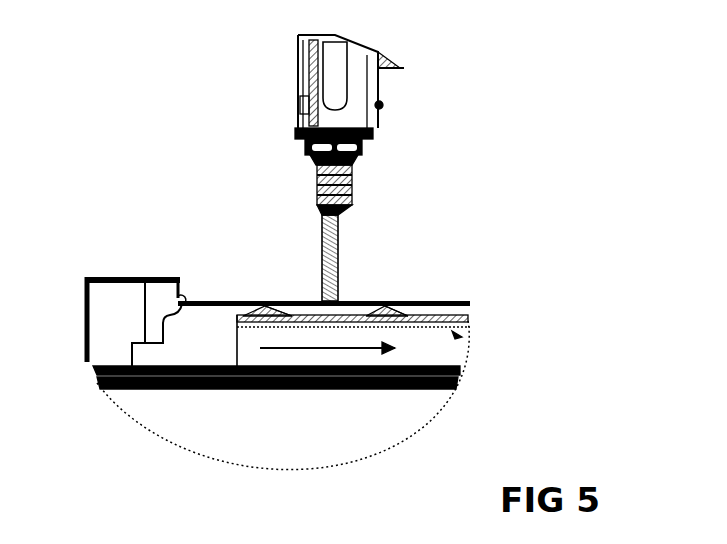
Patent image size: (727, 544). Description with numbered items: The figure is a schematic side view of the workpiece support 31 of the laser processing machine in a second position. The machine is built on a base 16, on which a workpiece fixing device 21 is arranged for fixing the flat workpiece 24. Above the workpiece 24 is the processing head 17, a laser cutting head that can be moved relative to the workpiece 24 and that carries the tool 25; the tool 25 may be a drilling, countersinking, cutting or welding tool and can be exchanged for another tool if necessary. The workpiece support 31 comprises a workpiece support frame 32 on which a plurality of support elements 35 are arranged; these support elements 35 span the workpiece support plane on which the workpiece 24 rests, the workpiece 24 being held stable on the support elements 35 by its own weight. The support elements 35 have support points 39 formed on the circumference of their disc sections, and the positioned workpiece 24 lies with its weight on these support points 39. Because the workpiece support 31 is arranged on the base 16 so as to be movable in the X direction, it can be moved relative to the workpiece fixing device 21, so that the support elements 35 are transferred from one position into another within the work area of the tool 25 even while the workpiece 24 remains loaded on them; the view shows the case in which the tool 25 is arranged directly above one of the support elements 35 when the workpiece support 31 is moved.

The processing head 17 is at (298, 82).
The tool 25 is at (323, 223).
The workpiece fixing device 21 is at (107, 275).
The flat workpiece 24 is at (362, 300).
The workpiece support 31 is at (468, 323).
The support elements 35 is at (260, 297).
The support points 39 is at (268, 300).
The workpiece support frame 32 is at (230, 387).
The base 16 is at (212, 440).